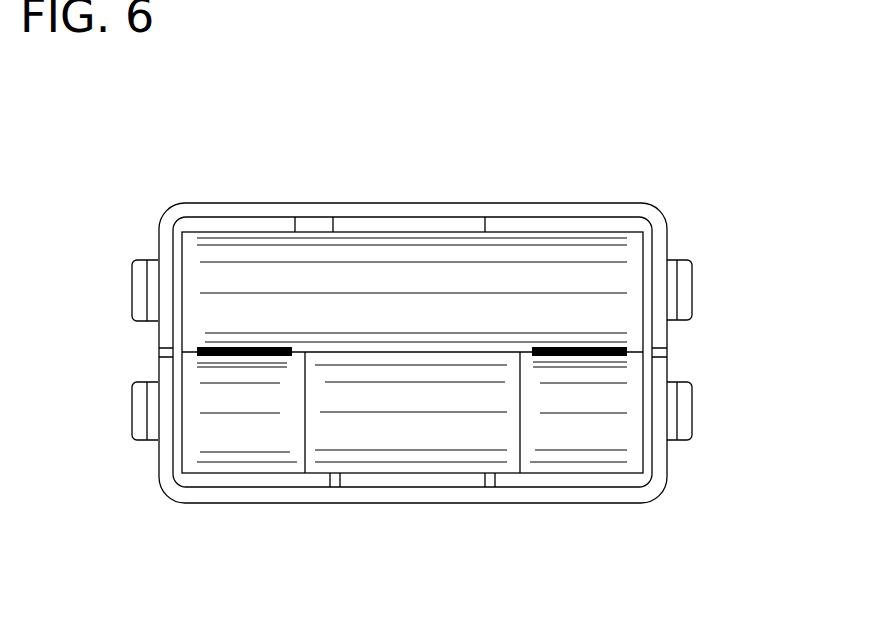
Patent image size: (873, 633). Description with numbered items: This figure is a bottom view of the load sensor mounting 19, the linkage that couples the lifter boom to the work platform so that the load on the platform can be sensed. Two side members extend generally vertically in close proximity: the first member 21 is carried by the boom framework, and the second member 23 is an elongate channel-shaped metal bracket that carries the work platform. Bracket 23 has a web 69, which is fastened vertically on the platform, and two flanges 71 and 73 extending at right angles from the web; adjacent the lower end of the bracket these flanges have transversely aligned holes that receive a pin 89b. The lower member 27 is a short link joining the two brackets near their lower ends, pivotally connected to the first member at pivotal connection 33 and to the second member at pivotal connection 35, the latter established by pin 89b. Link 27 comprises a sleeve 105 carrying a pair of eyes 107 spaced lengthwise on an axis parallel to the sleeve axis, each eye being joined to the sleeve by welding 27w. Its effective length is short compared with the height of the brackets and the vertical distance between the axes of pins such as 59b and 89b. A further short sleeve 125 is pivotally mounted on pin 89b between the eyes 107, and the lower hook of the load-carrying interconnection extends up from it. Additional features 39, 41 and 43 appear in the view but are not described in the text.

The load sensor mounting 19 is at (258, 508).
The first member 21 is at (672, 215).
The second member 23 is at (660, 493).
The fourth member 27 is at (383, 297).
The welding 27w is at (247, 348).
The pivotal connection 33 is at (130, 293).
The pivotal connection 35 is at (132, 413).
The top wall clips 39 is at (258, 202).
The right side seam 41 is at (667, 247).
The upper inner liner 43 is at (160, 218).
The pin 59b is at (692, 288).
The web 69 is at (528, 502).
The flange 71 is at (668, 367).
The flange 73 is at (158, 476).
The pin 89b is at (690, 418).
The sleeve 105 is at (482, 253).
The eyes 107 is at (240, 433).
The sleeve 125 is at (420, 435).